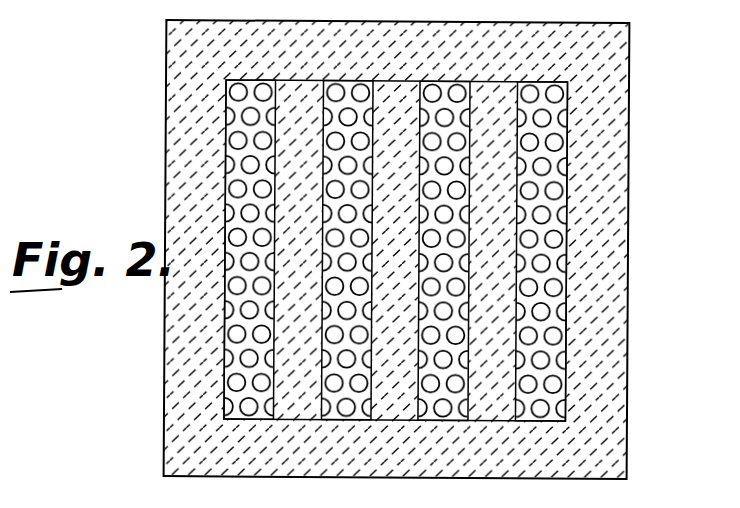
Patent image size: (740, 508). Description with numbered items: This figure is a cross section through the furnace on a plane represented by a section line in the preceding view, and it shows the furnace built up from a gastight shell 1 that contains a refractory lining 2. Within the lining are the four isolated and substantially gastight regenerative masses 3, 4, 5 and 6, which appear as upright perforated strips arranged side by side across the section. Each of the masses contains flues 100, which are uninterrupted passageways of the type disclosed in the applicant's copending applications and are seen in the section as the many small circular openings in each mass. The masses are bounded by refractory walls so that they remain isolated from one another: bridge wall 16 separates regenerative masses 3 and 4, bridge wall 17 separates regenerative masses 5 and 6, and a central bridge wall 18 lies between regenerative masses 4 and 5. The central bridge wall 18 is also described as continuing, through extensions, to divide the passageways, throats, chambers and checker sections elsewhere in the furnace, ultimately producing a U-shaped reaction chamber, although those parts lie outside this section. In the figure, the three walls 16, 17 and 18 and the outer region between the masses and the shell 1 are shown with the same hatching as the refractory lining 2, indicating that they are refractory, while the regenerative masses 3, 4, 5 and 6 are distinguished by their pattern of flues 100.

The gastight shell 1 is at (630, 117).
The refractory lining 2 is at (615, 50).
The regenerative mass 3 is at (236, 130).
The flues 100 is at (225, 90).
The regenerative mass 4 is at (351, 88).
The regenerative mass 5 is at (447, 88).
The regenerative mass 6 is at (543, 88).
The bridge wall 16 is at (306, 410).
The bridge wall 17 is at (495, 410).
The central bridge wall 18 is at (393, 407).